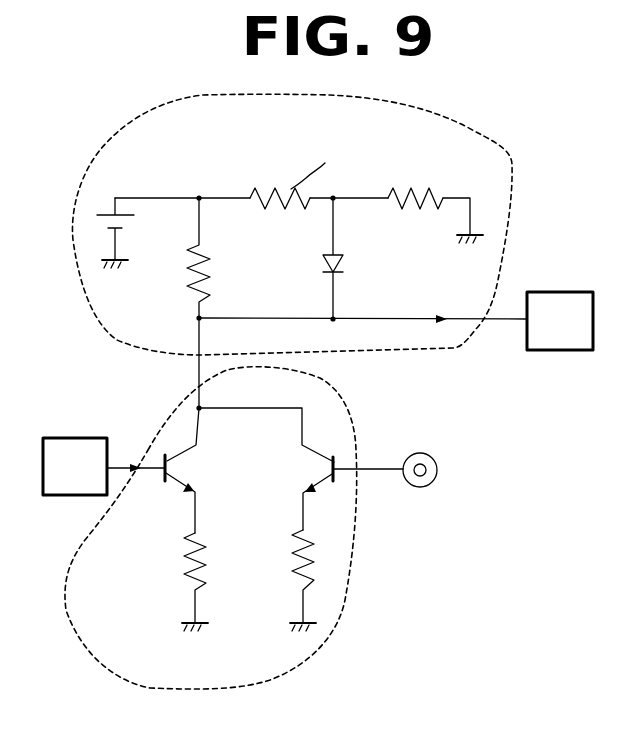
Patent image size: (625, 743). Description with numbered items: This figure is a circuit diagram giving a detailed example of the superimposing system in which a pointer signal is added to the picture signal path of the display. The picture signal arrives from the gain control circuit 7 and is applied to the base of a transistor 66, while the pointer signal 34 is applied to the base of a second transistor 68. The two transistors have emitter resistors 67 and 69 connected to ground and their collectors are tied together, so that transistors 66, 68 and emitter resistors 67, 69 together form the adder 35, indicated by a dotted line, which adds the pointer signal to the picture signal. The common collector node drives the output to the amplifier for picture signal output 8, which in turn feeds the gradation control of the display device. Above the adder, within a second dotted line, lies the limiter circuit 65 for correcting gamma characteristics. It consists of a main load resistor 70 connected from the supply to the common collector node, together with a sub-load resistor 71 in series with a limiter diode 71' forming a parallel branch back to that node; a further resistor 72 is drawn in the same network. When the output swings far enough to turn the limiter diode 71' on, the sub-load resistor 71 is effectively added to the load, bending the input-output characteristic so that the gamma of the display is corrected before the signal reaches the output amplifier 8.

The gain control circuit 7 is at (74, 438).
The amplifier for picture signal output 8 is at (545, 292).
The pointer signal 34 is at (420, 487).
The adder 35 is at (68, 610).
The limiter circuit 65 is at (512, 160).
The transistor 66 is at (173, 490).
The emitter resistor 67 is at (183, 570).
The transistor 68 is at (315, 472).
The emitter resistor 69 is at (290, 565).
The main load resistor 70 is at (186, 280).
The sub-load resistor 71 is at (291, 165).
The limiter diode 71' is at (372, 258).
The resistor 72 is at (410, 191).